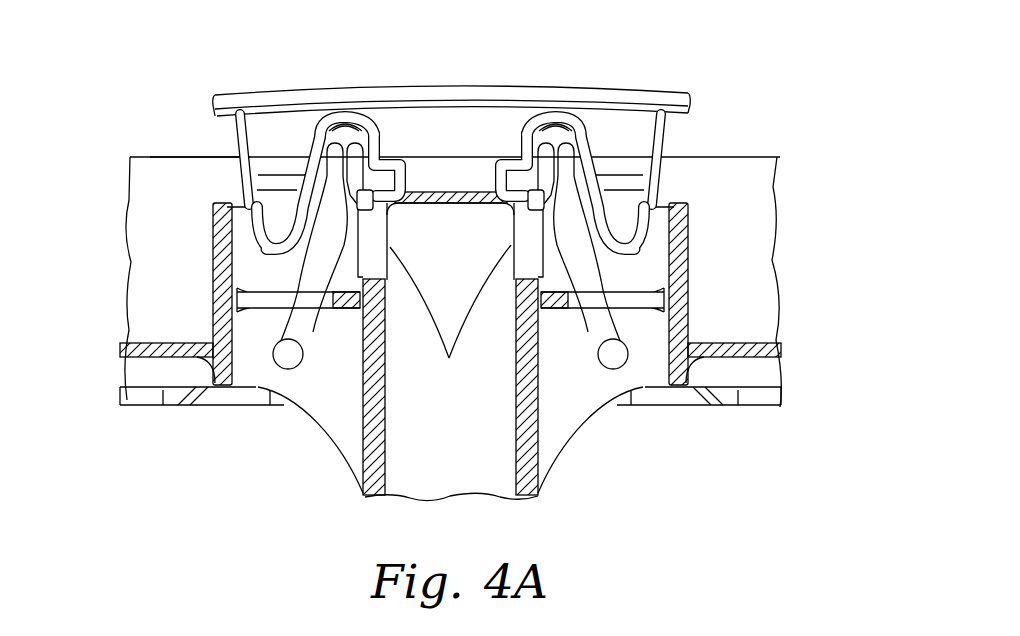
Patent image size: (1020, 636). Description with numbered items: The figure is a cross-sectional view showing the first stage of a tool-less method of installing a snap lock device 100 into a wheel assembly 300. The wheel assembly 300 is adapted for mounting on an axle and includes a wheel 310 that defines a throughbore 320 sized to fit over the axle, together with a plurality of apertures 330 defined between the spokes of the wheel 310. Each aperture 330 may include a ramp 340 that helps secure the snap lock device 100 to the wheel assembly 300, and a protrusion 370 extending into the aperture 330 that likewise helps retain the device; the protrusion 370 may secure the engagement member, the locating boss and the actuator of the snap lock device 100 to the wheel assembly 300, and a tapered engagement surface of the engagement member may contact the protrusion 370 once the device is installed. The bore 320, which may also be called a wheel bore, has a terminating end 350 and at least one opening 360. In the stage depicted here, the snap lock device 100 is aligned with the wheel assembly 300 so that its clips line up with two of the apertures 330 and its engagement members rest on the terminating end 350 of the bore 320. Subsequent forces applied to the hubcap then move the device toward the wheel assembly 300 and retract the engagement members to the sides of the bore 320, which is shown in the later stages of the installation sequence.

The snap lock device 100 is at (593, 80).
The wheel assembly 300 is at (735, 150).
The wheel 310 is at (200, 158).
The throughbore 320 is at (523, 452).
The apertures 330 is at (212, 295).
The ramp 340 is at (233, 225).
The terminating end 350 is at (434, 190).
The opening 360 is at (450, 316).
The protrusion 370 is at (360, 307).